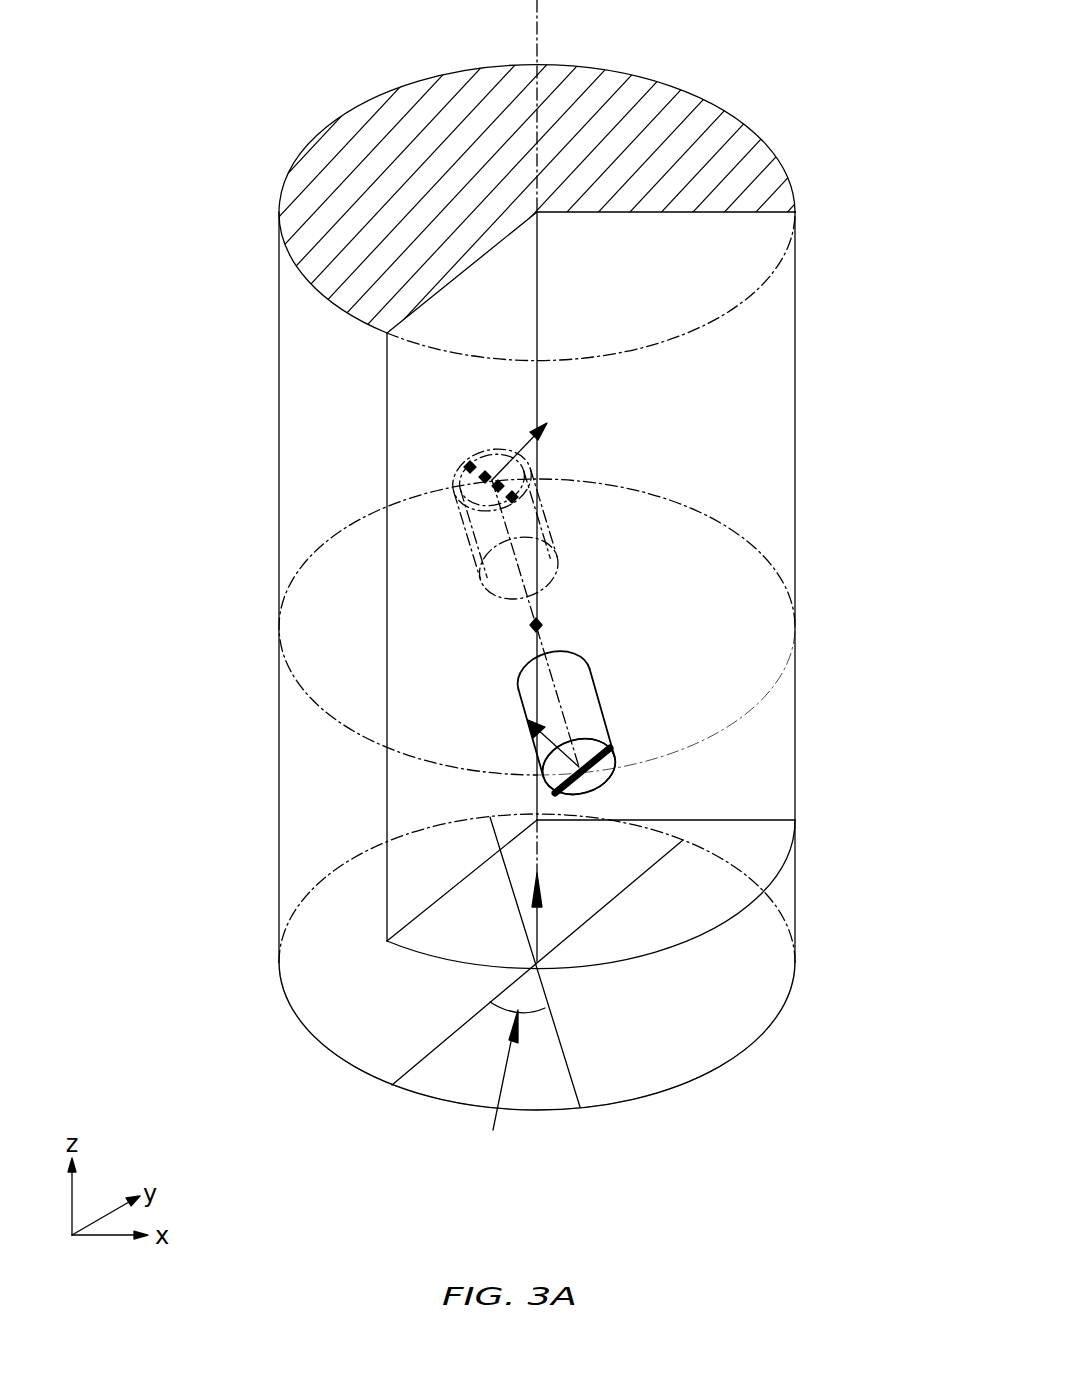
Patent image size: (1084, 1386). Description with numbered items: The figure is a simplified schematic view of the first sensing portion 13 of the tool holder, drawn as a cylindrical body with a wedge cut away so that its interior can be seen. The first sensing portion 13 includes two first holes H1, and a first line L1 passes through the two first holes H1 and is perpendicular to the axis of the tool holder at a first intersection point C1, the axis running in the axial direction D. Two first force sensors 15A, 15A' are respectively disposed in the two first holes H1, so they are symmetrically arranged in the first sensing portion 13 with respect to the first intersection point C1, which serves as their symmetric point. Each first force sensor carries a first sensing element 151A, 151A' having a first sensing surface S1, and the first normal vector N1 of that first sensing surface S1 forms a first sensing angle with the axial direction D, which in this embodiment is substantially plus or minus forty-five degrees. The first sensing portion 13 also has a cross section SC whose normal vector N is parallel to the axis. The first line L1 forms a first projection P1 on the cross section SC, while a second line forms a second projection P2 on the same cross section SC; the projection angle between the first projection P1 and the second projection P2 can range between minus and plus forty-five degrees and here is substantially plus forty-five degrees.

The first sensing portion 13 is at (140, 392).
The axial direction D is at (537, 32).
The cross section SC is at (757, 990).
The first projection P1 is at (566, 1063).
The second projection P2 is at (576, 930).
The normal vector N is at (542, 920).
The first holes H1 is at (483, 552).
The first intersection point C1 is at (530, 627).
The first line L1 is at (536, 625).
The first force sensor 15A' is at (355, 524).
The first sensing surface S1 is at (453, 478).
The first sensing element 151A' is at (324, 512).
The first normal vector N1 is at (535, 436).
The first force sensor 15A is at (715, 731).
The first sensing element 151A is at (745, 770).